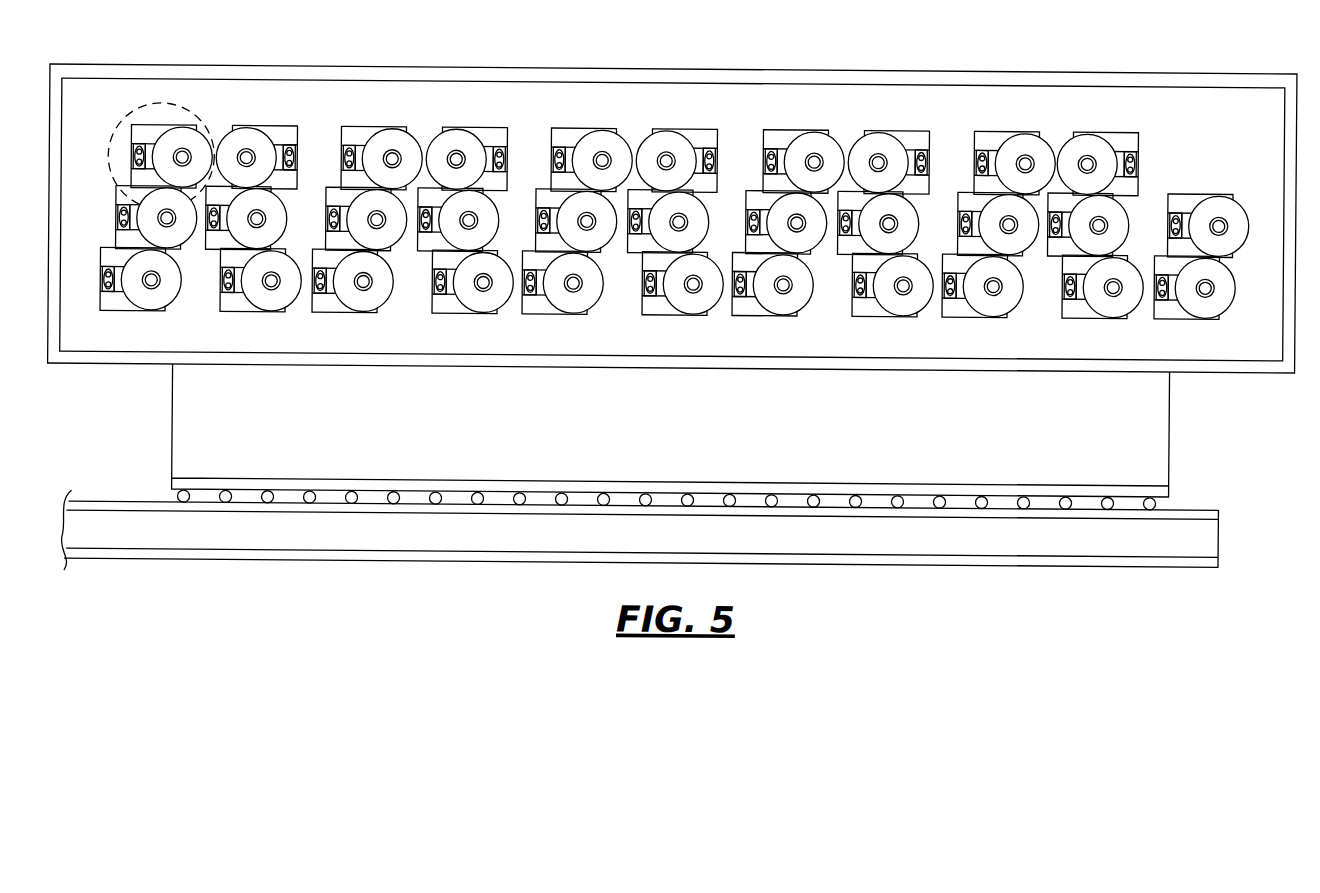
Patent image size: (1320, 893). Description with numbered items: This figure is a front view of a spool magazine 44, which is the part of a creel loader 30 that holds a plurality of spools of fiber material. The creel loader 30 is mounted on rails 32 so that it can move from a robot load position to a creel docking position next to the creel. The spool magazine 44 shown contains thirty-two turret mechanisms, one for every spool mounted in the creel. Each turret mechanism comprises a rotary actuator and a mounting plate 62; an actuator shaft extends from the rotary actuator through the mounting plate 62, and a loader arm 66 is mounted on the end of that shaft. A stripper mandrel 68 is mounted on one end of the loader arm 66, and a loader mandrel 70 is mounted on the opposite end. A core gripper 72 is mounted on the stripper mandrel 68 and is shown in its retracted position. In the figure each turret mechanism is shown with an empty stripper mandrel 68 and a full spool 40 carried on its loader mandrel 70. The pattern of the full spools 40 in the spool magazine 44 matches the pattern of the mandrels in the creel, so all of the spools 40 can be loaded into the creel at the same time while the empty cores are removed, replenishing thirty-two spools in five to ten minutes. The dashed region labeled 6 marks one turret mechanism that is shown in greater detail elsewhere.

The roller assembly detail region 6 is at (140, 106).
The creel loader 30 is at (1150, 428).
The rails 32 is at (125, 503).
The full spool 40 is at (358, 208).
The spool magazine 44 is at (1085, 100).
The mounting plate 62 is at (495, 132).
The loader arm 66 is at (1122, 178).
The stripper mandrel 68 is at (508, 147).
The loader mandrel 70 is at (397, 157).
The core gripper 72 is at (710, 150).